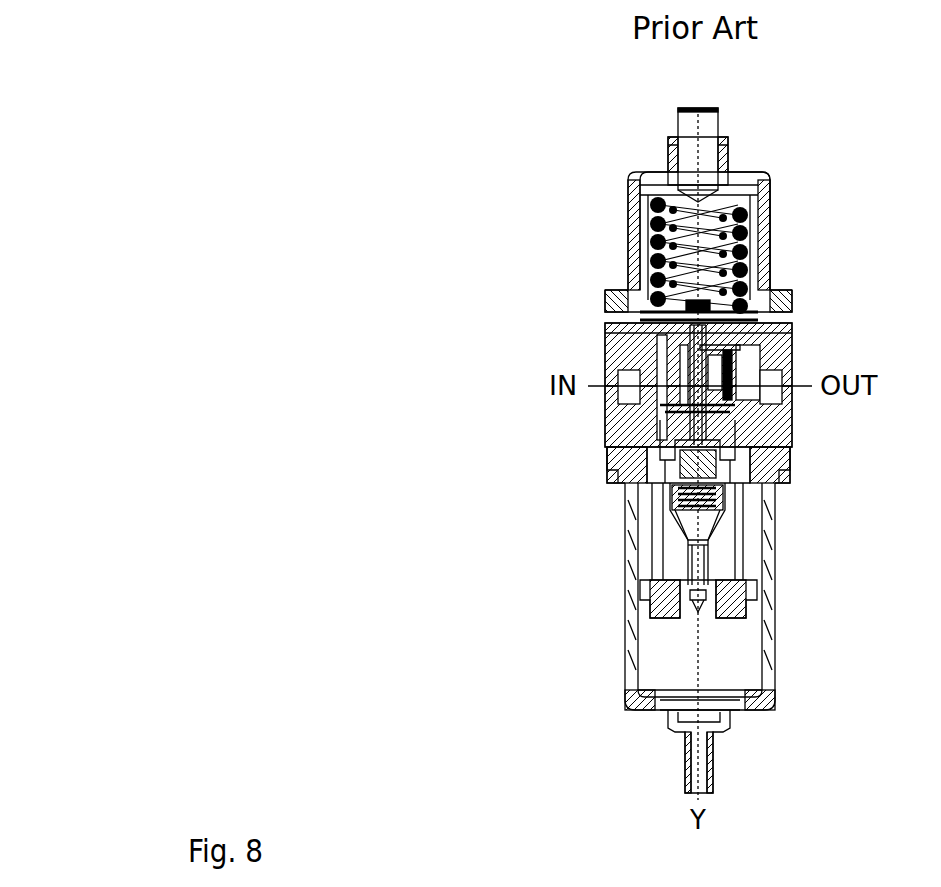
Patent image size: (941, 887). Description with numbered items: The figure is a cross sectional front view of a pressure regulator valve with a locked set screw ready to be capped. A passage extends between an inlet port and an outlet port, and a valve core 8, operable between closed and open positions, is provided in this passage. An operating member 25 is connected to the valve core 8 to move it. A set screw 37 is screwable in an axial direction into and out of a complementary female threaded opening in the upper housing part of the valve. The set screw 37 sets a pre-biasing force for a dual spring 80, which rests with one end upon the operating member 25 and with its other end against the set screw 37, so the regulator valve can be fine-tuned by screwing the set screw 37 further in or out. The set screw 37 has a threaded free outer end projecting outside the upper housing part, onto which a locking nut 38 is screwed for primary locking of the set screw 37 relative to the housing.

The set screw 37 is at (713, 110).
The locking nut 38 is at (727, 142).
The dual spring 80 is at (748, 248).
The operating member 25 is at (795, 440).
The valve core 8 is at (742, 507).